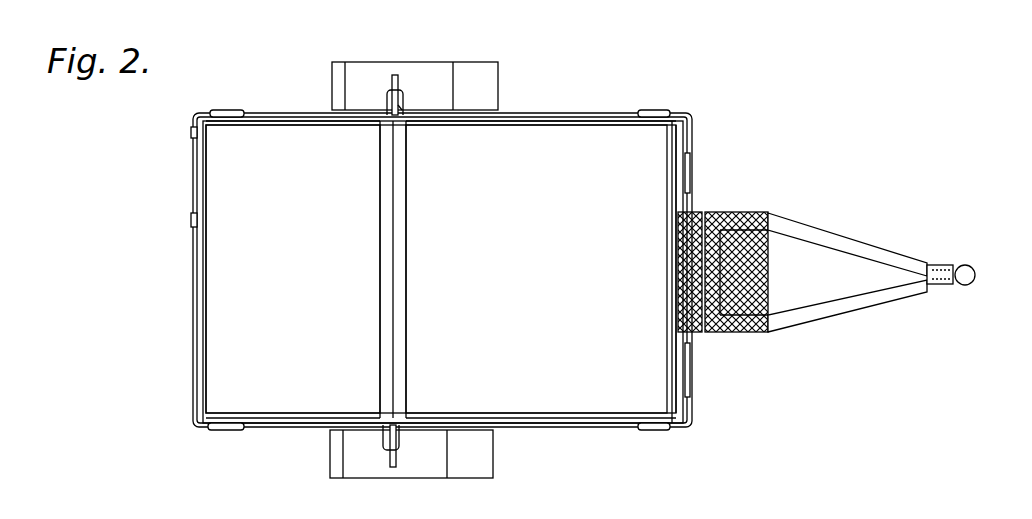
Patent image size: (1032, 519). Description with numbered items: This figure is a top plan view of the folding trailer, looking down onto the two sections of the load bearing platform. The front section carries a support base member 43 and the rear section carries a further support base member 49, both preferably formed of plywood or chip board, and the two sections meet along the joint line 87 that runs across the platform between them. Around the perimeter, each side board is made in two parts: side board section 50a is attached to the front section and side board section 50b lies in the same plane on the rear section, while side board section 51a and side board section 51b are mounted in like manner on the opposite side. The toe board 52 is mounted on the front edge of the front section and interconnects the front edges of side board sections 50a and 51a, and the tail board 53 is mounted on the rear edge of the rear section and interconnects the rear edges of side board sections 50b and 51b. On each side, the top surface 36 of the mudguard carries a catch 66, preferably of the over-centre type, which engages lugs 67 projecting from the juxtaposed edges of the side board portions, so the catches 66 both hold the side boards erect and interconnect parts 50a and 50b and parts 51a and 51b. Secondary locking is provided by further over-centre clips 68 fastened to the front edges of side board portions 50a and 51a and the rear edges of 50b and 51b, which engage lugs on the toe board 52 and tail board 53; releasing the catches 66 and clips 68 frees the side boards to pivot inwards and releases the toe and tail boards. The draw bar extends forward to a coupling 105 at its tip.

The top surface of mudguard 36 is at (387, 65).
The support base member 43 is at (550, 274).
The support base member 49 is at (308, 274).
The side board section 50a is at (577, 120).
The side board section 50b is at (267, 120).
The side board section 51a is at (540, 421).
The side board section 51b is at (282, 422).
The toe board 52 is at (672, 212).
The tail board 53 is at (198, 284).
The catch 66 is at (397, 88).
The lug 67 is at (400, 106).
The over-centre clip 68 is at (234, 428).
The joint line 87 is at (393, 312).
The coupler 105 is at (960, 264).